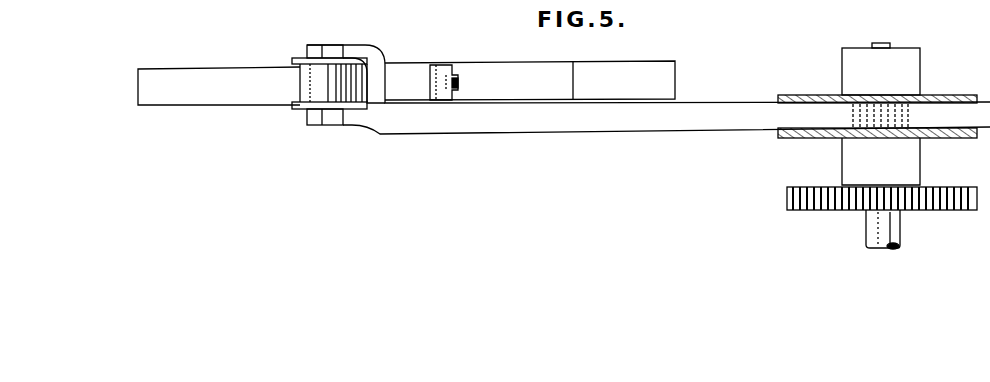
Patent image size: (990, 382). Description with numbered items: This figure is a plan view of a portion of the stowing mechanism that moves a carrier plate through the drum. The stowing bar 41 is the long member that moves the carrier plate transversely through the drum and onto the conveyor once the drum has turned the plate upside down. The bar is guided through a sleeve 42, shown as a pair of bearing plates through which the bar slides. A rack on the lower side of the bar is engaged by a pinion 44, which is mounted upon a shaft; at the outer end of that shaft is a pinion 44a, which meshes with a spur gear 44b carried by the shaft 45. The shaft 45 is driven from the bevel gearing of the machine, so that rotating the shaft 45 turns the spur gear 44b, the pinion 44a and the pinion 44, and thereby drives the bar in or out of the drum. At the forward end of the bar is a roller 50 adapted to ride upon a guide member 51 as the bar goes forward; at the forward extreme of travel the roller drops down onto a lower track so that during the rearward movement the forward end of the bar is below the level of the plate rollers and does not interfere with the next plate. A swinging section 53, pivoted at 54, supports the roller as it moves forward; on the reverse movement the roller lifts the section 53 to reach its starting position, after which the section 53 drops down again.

The stowing bar 41 is at (692, 115).
The sleeve 42 is at (794, 95).
The pinion 44 is at (856, 93).
The pinion 44a is at (865, 212).
The spur gear 44b is at (787, 207).
The shaft 45 is at (900, 236).
The roller 50 is at (298, 60).
The guide member 51 is at (242, 90).
The swinging section 53 is at (505, 68).
The pivot 54 is at (444, 63).